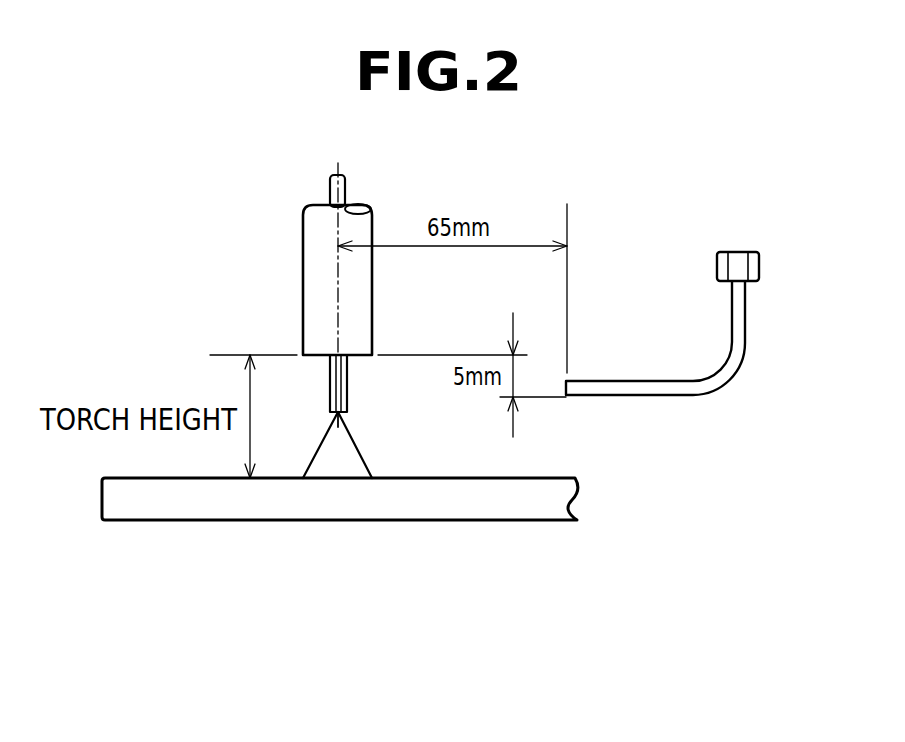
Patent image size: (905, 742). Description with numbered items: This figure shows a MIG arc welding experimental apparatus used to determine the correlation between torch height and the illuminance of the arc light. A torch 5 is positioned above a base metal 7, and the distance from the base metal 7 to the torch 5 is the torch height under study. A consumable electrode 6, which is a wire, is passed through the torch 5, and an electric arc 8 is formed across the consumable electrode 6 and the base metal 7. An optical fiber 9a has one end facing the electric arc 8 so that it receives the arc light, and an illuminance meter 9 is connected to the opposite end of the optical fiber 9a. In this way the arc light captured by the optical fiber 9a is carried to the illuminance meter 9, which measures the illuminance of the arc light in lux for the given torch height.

The torch 5 is at (372, 300).
The consumable electrode 6 is at (347, 397).
The base metal 7 is at (500, 520).
The electric arc 8 is at (360, 465).
The illuminance meter 9 is at (760, 268).
The optical fiber 9a is at (683, 396).